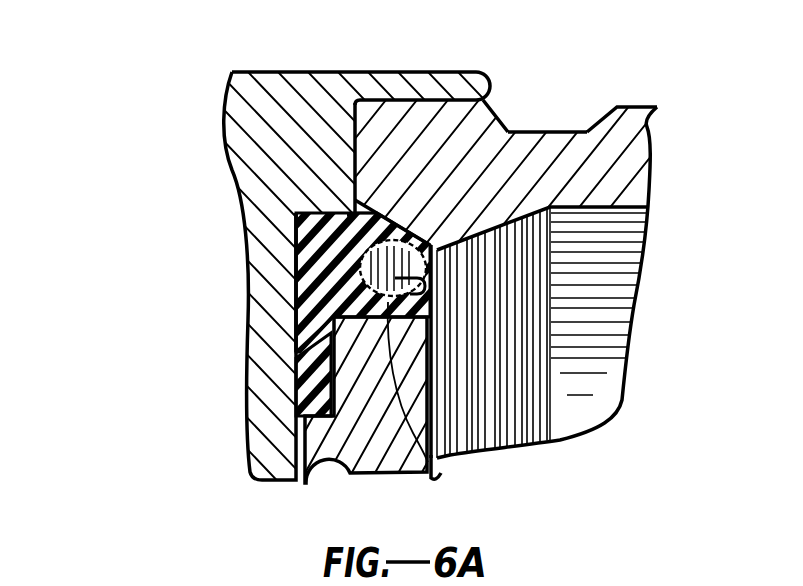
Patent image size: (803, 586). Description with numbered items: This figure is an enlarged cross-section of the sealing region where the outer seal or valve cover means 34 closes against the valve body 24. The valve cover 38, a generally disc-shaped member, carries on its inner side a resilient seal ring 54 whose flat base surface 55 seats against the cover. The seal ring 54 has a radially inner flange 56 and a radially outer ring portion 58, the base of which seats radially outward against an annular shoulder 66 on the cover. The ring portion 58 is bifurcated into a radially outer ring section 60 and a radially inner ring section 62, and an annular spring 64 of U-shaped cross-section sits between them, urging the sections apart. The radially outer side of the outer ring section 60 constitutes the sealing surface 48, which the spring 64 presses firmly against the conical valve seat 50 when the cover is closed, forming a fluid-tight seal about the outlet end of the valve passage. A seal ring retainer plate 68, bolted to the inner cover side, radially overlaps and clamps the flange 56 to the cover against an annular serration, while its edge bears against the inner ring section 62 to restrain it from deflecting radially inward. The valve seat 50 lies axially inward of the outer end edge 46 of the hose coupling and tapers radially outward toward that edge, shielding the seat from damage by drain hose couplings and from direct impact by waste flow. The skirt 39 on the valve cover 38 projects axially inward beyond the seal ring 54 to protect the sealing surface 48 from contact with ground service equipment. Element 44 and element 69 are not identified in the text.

The valve body 24 is at (657, 139).
The outer seal or valve cover means 34 is at (232, 461).
The valve cover 38 is at (270, 466).
The skirt 39 is at (478, 78).
The retainer 44 is at (350, 474).
The outer end edge 46 is at (350, 127).
The sealing surface 48 is at (416, 250).
The conical valve seat 50 is at (455, 262).
The resilient seal ring 54 is at (304, 270).
The flat base surface 55 is at (297, 241).
The radially inner flange 56 is at (300, 382).
The radially outer ring portion 58 is at (362, 208).
The radially outer ring section 60 is at (508, 133).
The radially inner ring section 62 is at (437, 467).
The annular spring 64 is at (447, 258).
The annular shoulder 66 is at (354, 205).
The seal ring retainer plate 68 is at (388, 455).
The sealing lip 69 is at (300, 338).